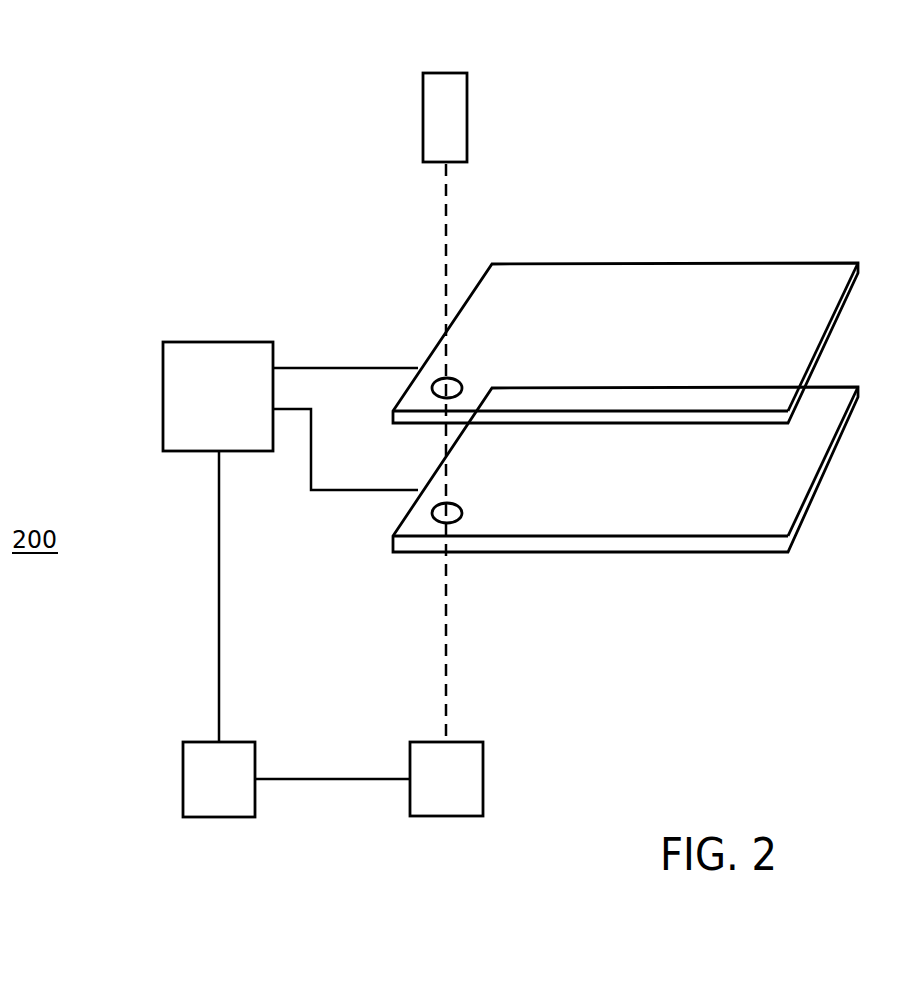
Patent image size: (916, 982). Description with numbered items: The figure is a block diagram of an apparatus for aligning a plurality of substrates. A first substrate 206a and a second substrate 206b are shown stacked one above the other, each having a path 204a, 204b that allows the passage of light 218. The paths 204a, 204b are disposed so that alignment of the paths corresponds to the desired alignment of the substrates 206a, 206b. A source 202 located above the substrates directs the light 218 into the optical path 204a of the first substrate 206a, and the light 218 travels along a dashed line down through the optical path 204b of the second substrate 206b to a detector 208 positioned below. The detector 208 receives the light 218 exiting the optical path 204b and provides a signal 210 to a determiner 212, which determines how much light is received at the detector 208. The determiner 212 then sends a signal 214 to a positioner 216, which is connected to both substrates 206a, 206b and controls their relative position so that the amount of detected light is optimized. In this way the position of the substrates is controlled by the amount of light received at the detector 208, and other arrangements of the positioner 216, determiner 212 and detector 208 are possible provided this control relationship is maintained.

The source 202 is at (467, 93).
The path 204a is at (453, 379).
The path 204b is at (453, 504).
The first substrate 206a is at (836, 261).
The second substrate 206b is at (836, 386).
The detector 208 is at (463, 742).
The signal 210 is at (310, 781).
The determiner 212 is at (206, 818).
The signal 214 is at (218, 607).
The positioner 216 is at (210, 342).
The light 218 is at (447, 225).